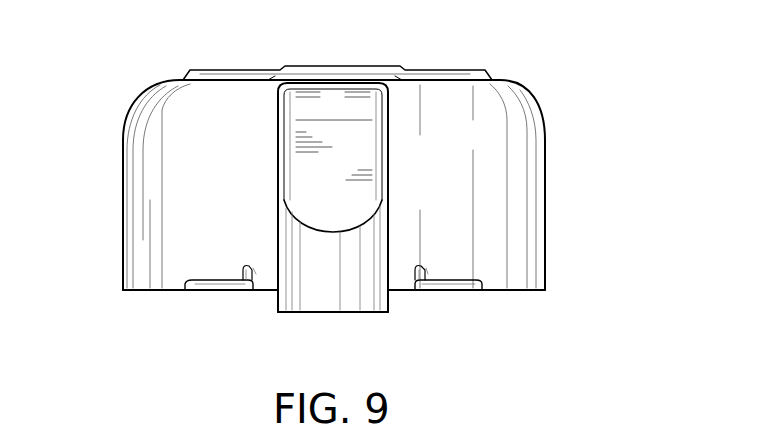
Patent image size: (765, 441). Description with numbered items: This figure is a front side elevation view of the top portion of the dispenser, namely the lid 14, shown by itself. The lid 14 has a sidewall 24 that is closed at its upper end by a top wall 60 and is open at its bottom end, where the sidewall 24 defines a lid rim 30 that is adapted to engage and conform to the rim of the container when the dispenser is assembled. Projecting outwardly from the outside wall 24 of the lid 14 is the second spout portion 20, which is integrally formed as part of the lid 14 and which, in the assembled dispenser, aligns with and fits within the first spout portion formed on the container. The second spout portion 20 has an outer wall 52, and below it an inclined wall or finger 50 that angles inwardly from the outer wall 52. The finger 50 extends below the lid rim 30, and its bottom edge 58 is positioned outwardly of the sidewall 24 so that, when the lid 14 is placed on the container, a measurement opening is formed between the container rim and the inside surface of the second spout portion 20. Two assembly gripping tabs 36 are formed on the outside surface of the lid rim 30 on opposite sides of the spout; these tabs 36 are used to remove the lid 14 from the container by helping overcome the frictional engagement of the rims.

The lid 14 is at (97, 122).
The second spout portion 20 is at (328, 106).
The sidewall 24 is at (198, 163).
The lid rim 30 is at (147, 292).
The gripping tabs 36 is at (217, 290).
The finger 50 is at (350, 252).
The outer wall 52 is at (360, 138).
The bottom edge 58 is at (323, 312).
The top wall 60 is at (395, 68).